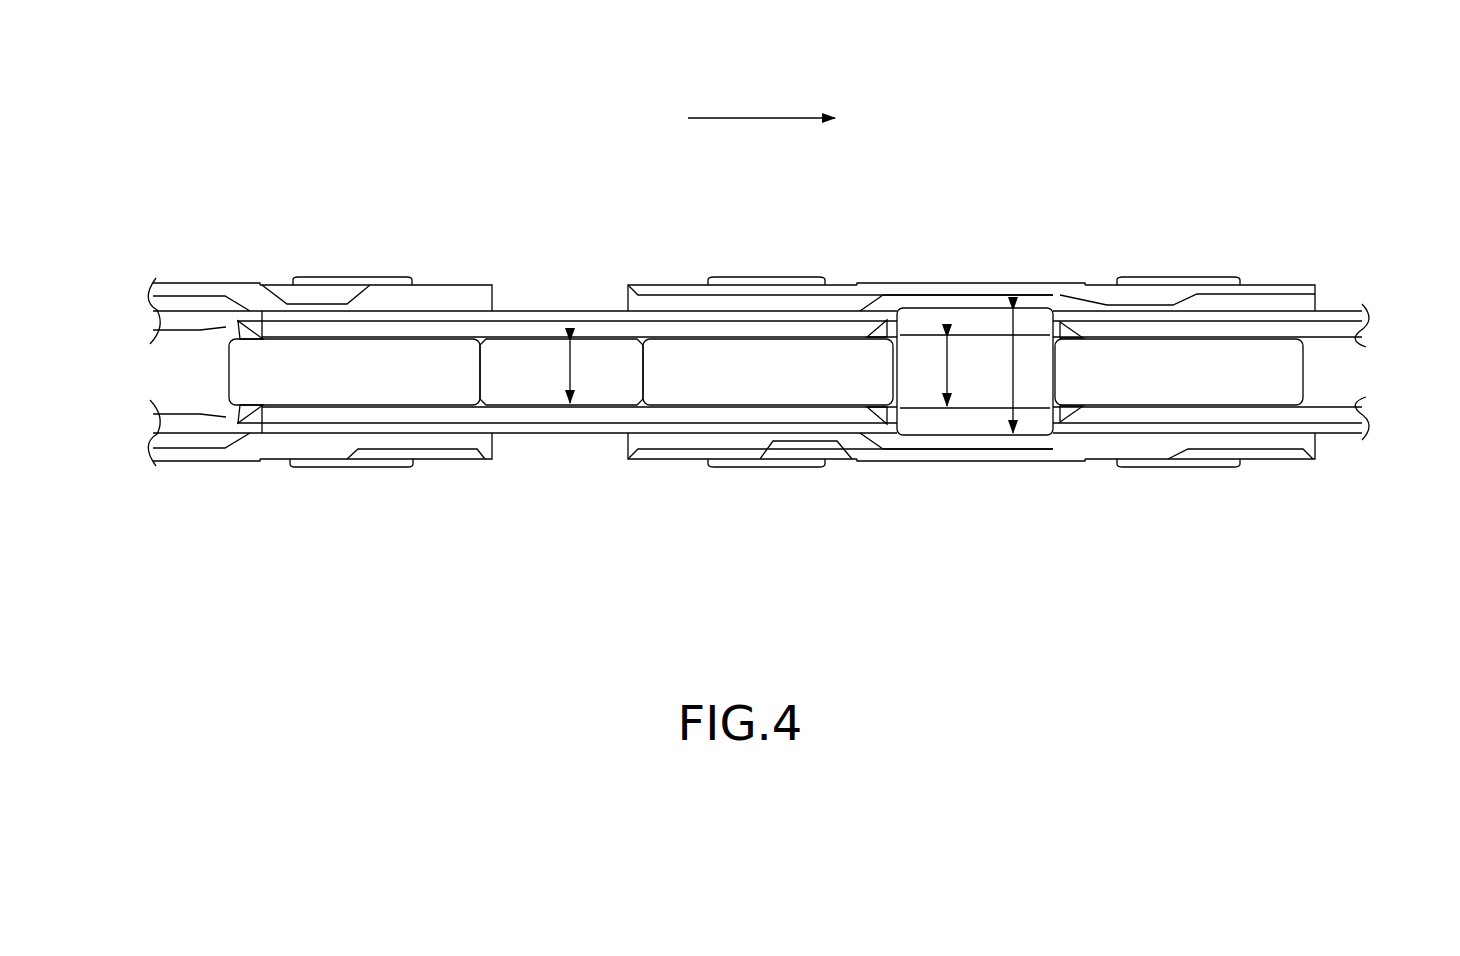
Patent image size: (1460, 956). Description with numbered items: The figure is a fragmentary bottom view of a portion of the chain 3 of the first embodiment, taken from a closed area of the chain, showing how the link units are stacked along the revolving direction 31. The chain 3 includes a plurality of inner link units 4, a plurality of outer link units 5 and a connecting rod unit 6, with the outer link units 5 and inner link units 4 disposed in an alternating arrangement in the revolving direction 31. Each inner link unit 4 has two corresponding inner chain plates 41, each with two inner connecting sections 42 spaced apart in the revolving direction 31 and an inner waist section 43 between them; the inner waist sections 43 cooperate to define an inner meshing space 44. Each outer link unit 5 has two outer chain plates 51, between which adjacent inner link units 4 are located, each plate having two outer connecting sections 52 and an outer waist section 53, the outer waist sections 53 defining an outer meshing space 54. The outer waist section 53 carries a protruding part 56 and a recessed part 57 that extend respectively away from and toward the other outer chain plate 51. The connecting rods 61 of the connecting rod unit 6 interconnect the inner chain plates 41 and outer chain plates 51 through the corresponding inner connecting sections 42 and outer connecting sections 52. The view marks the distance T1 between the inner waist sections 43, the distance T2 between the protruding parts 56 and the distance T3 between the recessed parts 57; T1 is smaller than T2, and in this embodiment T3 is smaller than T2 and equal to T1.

The chain 3 is at (1195, 206).
The revolving direction 31 is at (748, 118).
The inner link unit 4 is at (543, 291).
The inner chain plate 41 is at (518, 304).
The inner connecting section 42 is at (378, 330).
The inner waist section 43 is at (555, 330).
The inner meshing space 44 is at (612, 356).
The outer link unit 5 is at (193, 271).
The outer chain plate 51 is at (945, 282).
The outer connecting section 52 is at (783, 295).
The outer waist section 53 is at (985, 178).
The outer meshing space 54 is at (161, 366).
The protruding part 56 is at (1020, 292).
The recessed part 57 is at (978, 318).
The connecting rod unit 6 is at (384, 480).
The connecting rod 61 is at (358, 467).
The distance between inner waist sections T1 is at (571, 373).
The distance between protruding parts T2 is at (1013, 373).
The distance between recessed parts T3 is at (945, 373).